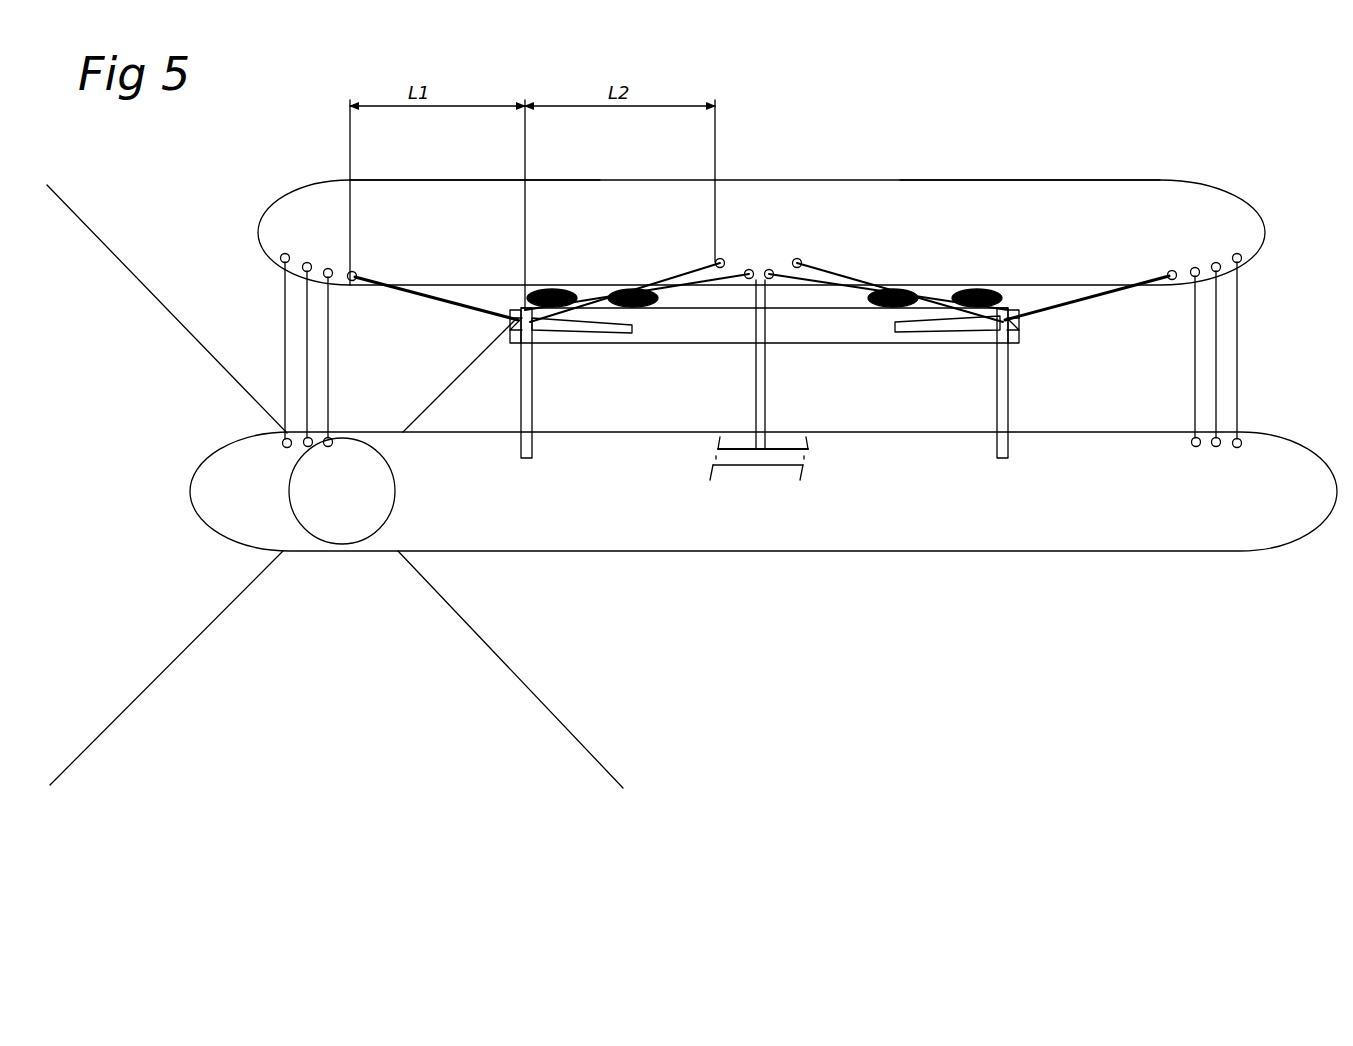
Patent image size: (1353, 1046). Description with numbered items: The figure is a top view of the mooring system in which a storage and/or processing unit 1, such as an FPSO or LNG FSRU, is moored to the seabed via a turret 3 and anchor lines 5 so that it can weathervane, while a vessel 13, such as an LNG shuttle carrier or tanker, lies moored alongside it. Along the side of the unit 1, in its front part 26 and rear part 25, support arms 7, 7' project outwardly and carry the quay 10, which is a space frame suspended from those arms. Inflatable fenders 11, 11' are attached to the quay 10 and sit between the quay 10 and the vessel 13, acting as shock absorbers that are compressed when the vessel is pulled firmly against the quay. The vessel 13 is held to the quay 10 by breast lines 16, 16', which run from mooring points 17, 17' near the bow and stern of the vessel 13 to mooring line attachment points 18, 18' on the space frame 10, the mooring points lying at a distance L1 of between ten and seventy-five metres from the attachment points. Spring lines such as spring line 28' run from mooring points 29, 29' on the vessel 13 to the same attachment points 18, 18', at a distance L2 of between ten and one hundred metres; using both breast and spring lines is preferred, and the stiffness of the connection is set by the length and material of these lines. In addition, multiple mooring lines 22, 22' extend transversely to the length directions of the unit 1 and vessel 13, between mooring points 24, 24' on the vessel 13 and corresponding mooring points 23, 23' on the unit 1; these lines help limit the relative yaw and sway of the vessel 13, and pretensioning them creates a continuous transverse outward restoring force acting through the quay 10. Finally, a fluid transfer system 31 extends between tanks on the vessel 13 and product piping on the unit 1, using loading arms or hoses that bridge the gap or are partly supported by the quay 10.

The storage and/or processing unit 1 is at (1307, 462).
The turret 3 is at (344, 517).
The anchor lines 5 is at (530, 678).
The support arm 7 is at (1025, 383).
The support arm 7' is at (548, 383).
The quay 10 is at (877, 330).
The fender 11 is at (955, 272).
The fender 11' is at (592, 267).
The vessel 13 is at (935, 195).
The breast line 16 is at (1087, 314).
The breast line 16' is at (436, 317).
The mooring point 17 is at (1162, 312).
The mooring point 17' is at (367, 315).
The mooring line attachment point 18 is at (1043, 335).
The mooring line attachment point 18' is at (486, 279).
The mooring line 22 is at (1247, 350).
The mooring line 22' is at (334, 350).
The mooring point 23 is at (1196, 527).
The mooring point 23' is at (249, 423).
The mooring point 24 is at (1279, 279).
The mooring point 24' is at (261, 212).
The rear part 25 is at (1050, 184).
The front part 26 is at (452, 180).
The spring line 28' is at (637, 275).
The mooring point 29 is at (800, 204).
The mooring point 29' is at (756, 204).
The fluid transfer system 31 is at (762, 375).